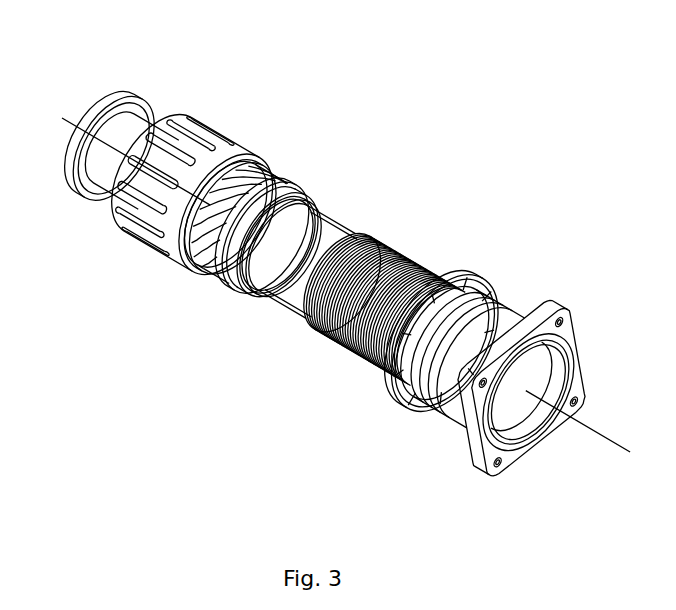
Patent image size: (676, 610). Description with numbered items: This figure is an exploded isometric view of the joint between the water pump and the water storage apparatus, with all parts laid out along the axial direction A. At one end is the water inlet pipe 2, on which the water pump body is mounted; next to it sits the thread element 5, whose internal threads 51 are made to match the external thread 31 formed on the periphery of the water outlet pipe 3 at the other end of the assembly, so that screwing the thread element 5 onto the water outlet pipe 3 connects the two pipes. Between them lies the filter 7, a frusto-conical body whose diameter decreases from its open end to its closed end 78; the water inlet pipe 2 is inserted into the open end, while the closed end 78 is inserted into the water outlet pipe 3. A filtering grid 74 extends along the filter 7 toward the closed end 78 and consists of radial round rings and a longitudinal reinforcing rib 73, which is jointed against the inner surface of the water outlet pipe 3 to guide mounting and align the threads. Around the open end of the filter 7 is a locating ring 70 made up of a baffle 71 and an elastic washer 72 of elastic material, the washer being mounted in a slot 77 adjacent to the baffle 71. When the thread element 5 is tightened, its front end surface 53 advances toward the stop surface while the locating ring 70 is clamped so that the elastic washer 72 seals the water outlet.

The water inlet pipe 2 is at (132, 147).
The thread element 5 is at (200, 123).
The internal threads 51 is at (228, 165).
The front end surface 53 is at (235, 180).
The elastic washer 72 is at (265, 190).
The slot 77 is at (292, 195).
The filter 7 is at (342, 230).
The filtering grid 74 is at (375, 250).
The closed end 78 is at (399, 390).
The external thread 31 is at (492, 300).
The water outlet pipe 3 is at (508, 305).
The locating ring 70 is at (207, 278).
The baffle 71 is at (232, 288).
The reinforcing rib 73 is at (273, 287).
The axial direction A is at (355, 294).